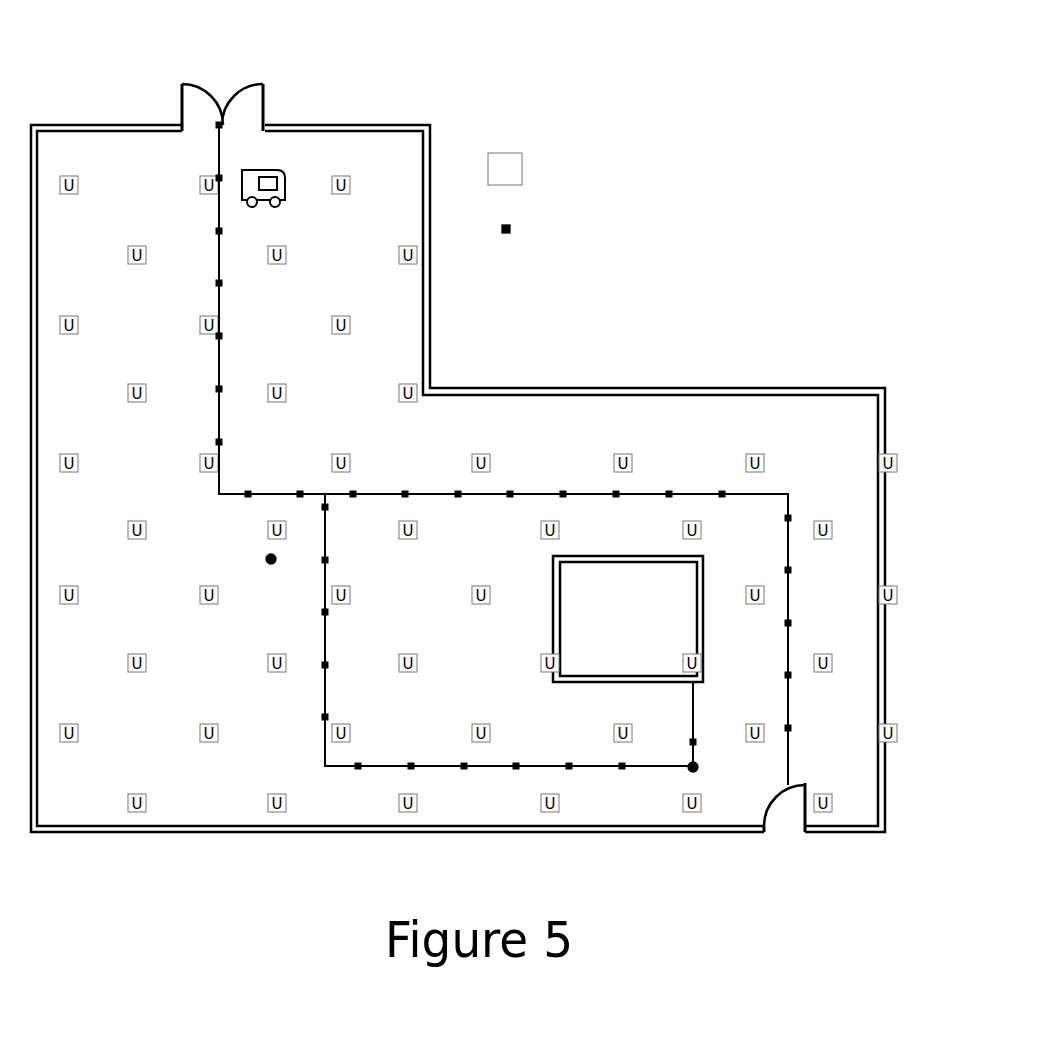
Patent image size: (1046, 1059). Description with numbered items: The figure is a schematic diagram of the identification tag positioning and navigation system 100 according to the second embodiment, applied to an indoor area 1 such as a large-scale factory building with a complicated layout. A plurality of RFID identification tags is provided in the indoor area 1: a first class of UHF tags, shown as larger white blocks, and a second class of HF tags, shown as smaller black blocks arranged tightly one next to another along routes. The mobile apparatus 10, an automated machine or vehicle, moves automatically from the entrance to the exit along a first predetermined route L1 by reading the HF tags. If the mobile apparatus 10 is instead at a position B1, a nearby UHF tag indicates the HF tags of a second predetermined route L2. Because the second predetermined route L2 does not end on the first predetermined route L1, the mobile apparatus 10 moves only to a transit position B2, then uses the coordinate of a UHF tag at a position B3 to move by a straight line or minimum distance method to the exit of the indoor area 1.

The indoor area 1 is at (562, 390).
The mobile apparatus 10 is at (286, 183).
The identification tag positioning and navigation system 100 is at (847, 337).
The first predetermined route L1 is at (216, 63).
The second predetermined route L2 is at (325, 689).
The position B1 is at (271, 554).
The transit position B2 is at (692, 762).
The position B3 is at (704, 802).